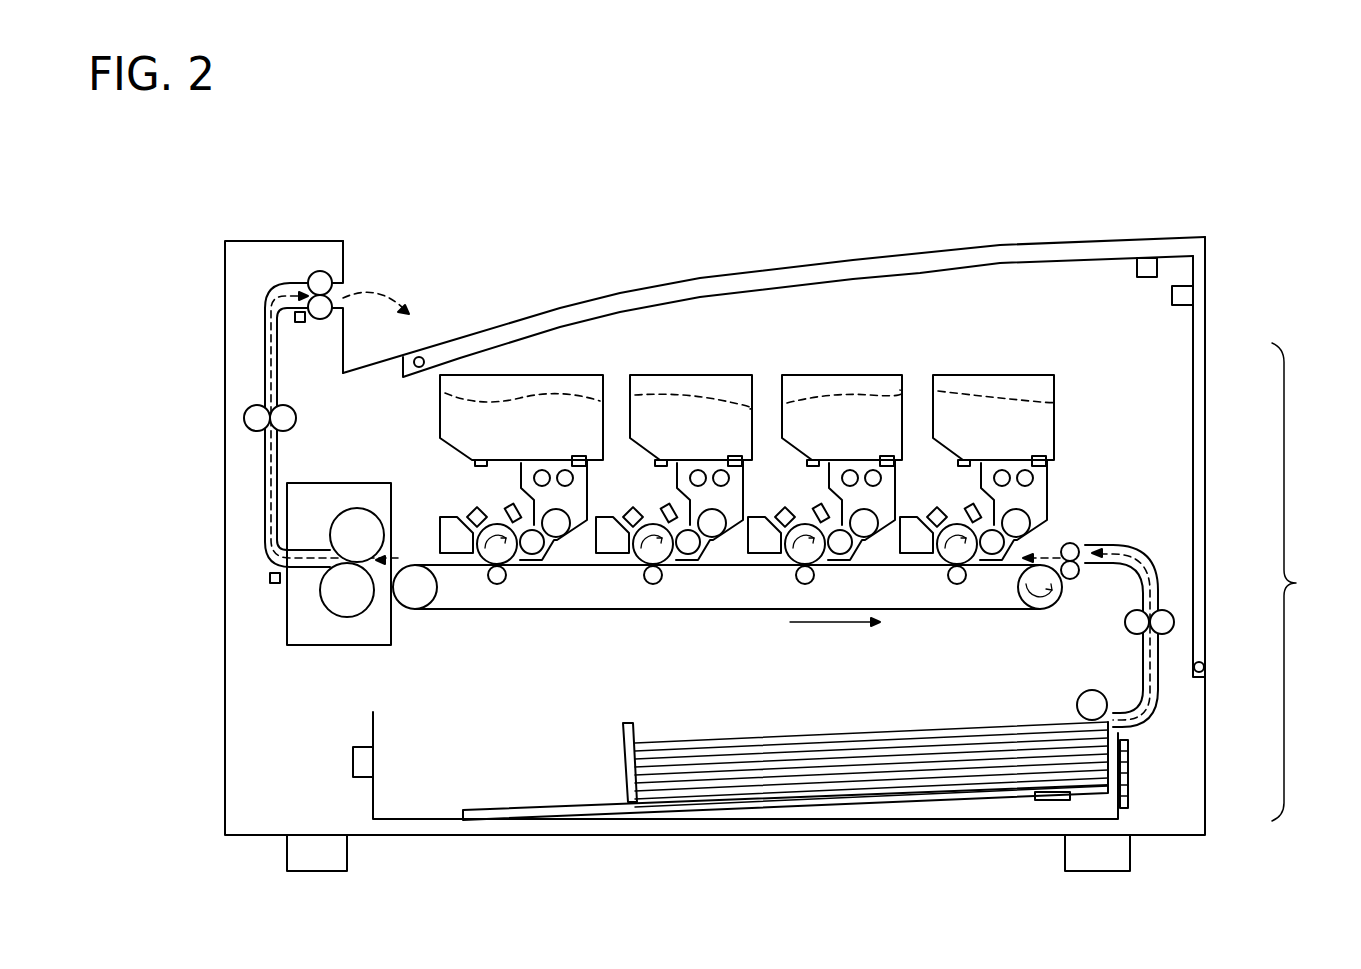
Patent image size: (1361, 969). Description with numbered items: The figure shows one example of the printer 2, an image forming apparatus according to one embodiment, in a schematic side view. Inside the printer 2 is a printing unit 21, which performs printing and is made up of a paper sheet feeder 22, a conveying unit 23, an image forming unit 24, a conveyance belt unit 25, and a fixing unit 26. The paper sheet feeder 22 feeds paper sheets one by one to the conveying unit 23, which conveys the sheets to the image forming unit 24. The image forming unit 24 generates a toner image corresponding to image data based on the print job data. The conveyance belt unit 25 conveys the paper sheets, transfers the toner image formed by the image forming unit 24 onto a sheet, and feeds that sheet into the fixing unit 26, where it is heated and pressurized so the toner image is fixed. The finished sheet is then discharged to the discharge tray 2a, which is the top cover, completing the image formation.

The printer 2 is at (1212, 234).
The discharge tray 2a is at (500, 342).
The printing unit 21 is at (1302, 582).
The paper sheet feeder 22 is at (1128, 754).
The conveying unit 23 is at (1170, 594).
The image forming unit 24 is at (597, 483).
The conveyance belt unit 25 is at (1066, 616).
The fixing unit 26 is at (283, 652).